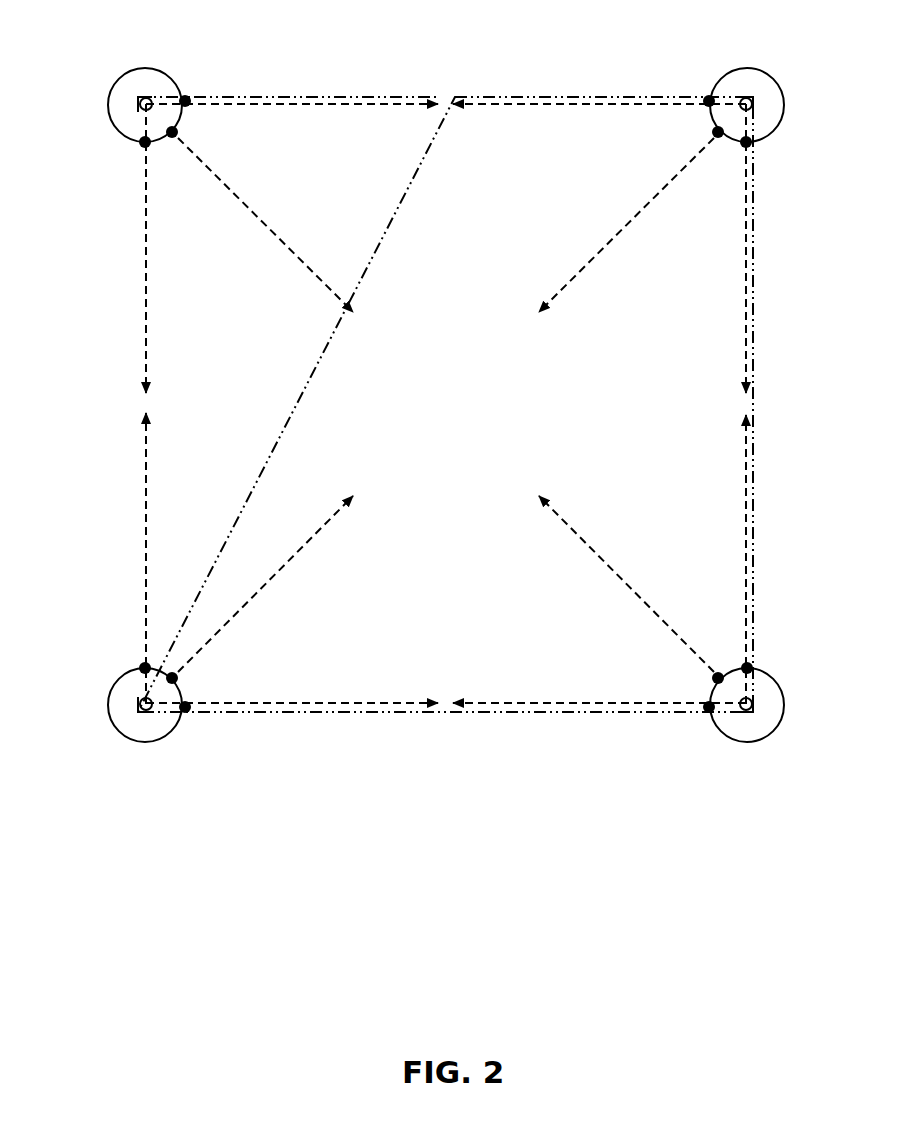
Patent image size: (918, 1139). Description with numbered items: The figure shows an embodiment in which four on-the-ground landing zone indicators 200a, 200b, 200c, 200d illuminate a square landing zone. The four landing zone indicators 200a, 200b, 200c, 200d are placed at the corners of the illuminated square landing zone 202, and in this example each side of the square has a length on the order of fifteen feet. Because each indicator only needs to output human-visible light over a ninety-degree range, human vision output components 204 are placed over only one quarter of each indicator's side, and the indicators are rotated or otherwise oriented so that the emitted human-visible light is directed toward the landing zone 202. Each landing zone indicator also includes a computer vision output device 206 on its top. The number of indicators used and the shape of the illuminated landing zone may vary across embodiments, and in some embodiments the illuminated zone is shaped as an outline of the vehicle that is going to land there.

The landing zone indicator 200a is at (166, 90).
The landing zone indicator 200b is at (748, 67).
The landing zone indicator 200c is at (145, 743).
The landing zone indicator 200d is at (747, 743).
The illuminated square landing zone 202 is at (447, 97).
The human vision output component 204 is at (183, 130).
The computer vision output device 206 is at (140, 102).